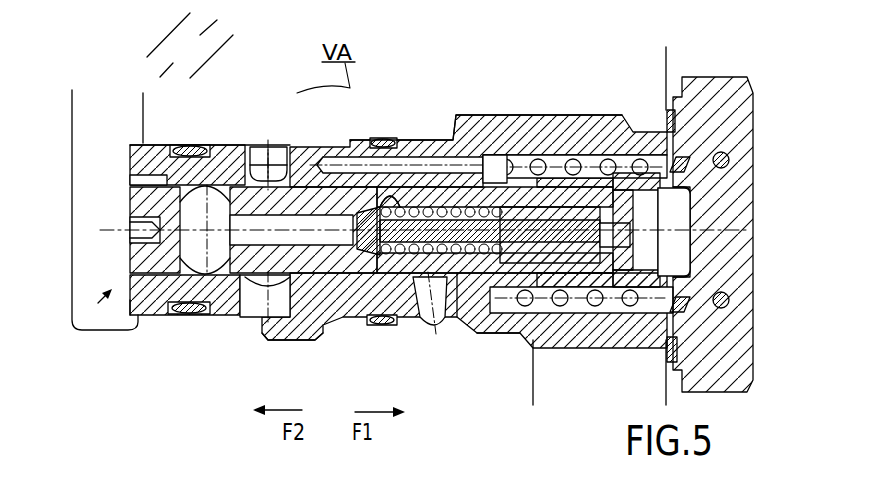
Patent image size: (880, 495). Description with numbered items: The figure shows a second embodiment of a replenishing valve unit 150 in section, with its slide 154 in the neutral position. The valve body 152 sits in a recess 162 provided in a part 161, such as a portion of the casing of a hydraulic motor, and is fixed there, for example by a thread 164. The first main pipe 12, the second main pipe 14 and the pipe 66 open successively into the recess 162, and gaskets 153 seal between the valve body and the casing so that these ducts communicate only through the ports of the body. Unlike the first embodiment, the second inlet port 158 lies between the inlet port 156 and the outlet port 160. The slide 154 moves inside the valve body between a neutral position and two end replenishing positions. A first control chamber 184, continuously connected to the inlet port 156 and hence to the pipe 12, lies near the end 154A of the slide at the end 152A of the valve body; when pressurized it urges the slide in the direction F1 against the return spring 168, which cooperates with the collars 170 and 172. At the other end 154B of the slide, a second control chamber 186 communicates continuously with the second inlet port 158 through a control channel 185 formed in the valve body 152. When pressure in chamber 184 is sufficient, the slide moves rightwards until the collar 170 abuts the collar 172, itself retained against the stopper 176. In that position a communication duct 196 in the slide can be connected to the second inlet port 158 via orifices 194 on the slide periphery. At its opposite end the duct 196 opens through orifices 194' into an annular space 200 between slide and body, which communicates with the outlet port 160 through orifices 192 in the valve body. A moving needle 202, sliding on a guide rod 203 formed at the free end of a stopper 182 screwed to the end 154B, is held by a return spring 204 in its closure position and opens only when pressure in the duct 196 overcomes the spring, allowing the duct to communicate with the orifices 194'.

The first main pipe 12 is at (81, 118).
The second main pipe 14 is at (266, 138).
The pipe 66 is at (534, 380).
The valve unit 150 is at (197, 388).
The valve body 152 is at (407, 148).
The end of the valve body 152A is at (125, 317).
The gaskets 153 is at (190, 312).
The slide 154 is at (297, 200).
The end of the slide 154A is at (147, 200).
The other end of the slide 154B is at (563, 262).
The inlet port 156 is at (73, 328).
The second inlet port 158 is at (280, 131).
The outlet port 160 is at (518, 387).
The part 161 is at (205, 62).
The recess 162 is at (143, 157).
The thread 164 is at (620, 127).
The spring 168 is at (572, 160).
The collar 170 is at (493, 318).
The collar 172 is at (690, 305).
The stopper 176 is at (723, 192).
The stopper 182 is at (633, 213).
The first control chamber 184 is at (155, 312).
The control channel 185 is at (353, 160).
The second control chamber 186 is at (680, 245).
The orifices 192 is at (431, 332).
The orifices 194 is at (197, 180).
The orifices 194' is at (435, 133).
The communication duct 196 is at (295, 322).
The annular space 200 is at (380, 324).
The needle 202 is at (312, 330).
The guide rod 203 is at (467, 292).
The return spring 204 is at (490, 157).